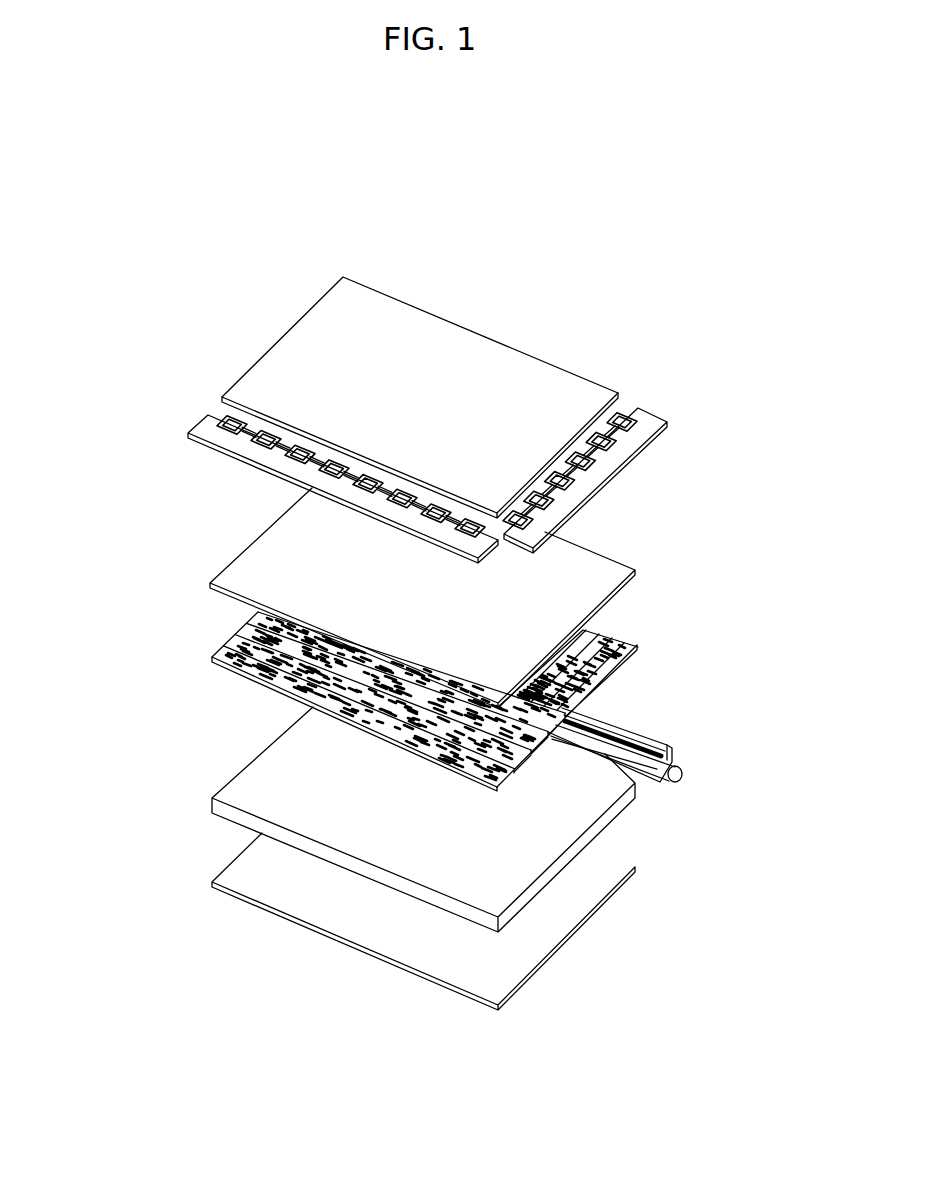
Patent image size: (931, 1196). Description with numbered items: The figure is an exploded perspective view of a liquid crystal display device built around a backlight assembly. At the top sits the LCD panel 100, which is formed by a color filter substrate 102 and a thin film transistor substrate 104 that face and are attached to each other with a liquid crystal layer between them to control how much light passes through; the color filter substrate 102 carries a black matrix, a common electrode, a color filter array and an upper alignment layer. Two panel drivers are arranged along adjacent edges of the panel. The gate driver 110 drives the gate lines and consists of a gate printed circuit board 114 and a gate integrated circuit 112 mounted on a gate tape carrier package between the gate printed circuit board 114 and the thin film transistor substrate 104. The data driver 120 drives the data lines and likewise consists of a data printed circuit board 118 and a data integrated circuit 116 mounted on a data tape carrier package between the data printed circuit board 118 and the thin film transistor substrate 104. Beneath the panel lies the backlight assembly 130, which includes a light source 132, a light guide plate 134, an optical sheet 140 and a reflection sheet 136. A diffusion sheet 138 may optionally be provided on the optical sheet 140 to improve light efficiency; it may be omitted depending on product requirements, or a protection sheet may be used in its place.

The LCD panel 100 is at (778, 308).
The color filter substrate 102 is at (597, 399).
The thin film transistor substrate 104 is at (622, 408).
The gate driver 110 is at (778, 418).
The gate integrated circuit 112 is at (632, 428).
The gate printed circuit board 114 is at (637, 444).
The data integrated circuit 116 is at (205, 426).
The data printed circuit board 118 is at (203, 424).
The data driver 120 is at (62, 395).
The backlight assembly 130 is at (777, 503).
The light source 132 is at (627, 753).
The light guide plate 134 is at (660, 750).
The reflection sheet 136 is at (587, 850).
The diffusion sheet 138 is at (613, 578).
The optical sheet 140 is at (627, 629).